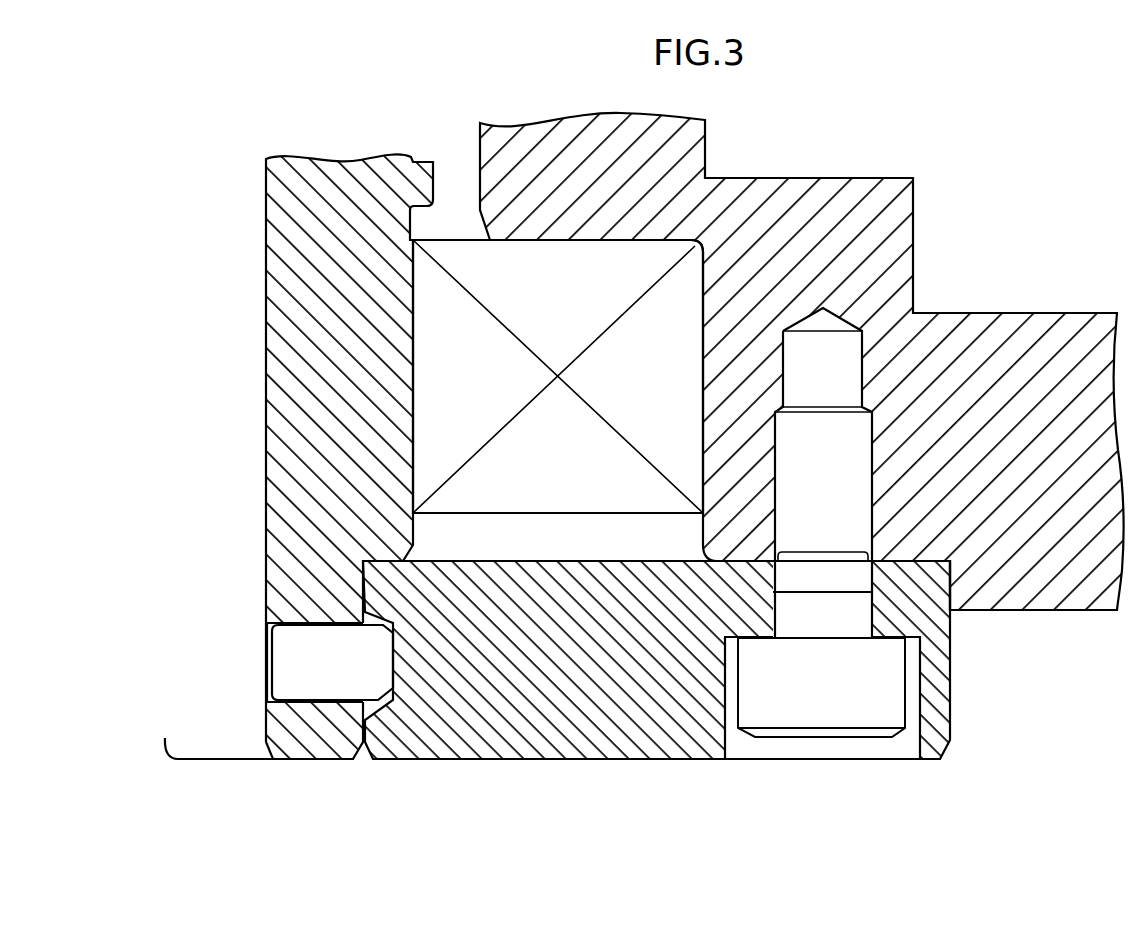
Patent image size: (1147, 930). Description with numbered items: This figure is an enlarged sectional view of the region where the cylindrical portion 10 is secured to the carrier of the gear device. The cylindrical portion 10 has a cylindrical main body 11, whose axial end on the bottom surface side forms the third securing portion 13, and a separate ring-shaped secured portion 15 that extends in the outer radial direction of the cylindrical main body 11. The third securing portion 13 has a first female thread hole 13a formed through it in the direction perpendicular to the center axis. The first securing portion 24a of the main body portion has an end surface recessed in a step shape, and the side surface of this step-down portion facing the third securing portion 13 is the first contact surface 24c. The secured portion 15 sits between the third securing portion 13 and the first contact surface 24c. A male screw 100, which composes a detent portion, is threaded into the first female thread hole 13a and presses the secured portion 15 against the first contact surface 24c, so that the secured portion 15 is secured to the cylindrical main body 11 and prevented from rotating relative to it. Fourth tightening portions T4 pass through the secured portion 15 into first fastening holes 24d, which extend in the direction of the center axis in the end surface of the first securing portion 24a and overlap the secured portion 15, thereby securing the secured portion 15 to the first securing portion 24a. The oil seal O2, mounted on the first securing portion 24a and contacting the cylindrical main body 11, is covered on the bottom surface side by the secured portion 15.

The cylindrical portion 10 is at (299, 456).
The cylindrical main body 11 is at (303, 382).
The third securing portion 13 is at (293, 603).
The first female thread hole 13a is at (266, 636).
The male screw 100 is at (303, 664).
The oil seal O2 is at (460, 359).
The secured portion 15 is at (553, 683).
The first securing portion 24a is at (802, 403).
The first contact surface 24c is at (950, 580).
The first fastening holes 24d is at (863, 371).
The fourth tightening portions T4 is at (833, 678).